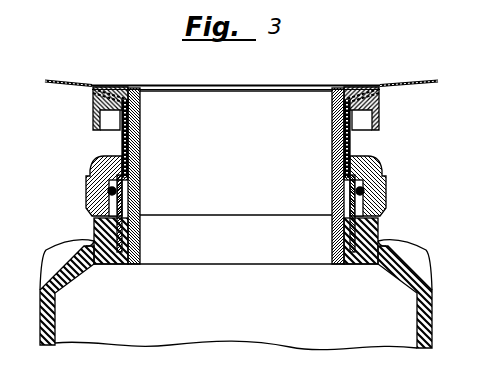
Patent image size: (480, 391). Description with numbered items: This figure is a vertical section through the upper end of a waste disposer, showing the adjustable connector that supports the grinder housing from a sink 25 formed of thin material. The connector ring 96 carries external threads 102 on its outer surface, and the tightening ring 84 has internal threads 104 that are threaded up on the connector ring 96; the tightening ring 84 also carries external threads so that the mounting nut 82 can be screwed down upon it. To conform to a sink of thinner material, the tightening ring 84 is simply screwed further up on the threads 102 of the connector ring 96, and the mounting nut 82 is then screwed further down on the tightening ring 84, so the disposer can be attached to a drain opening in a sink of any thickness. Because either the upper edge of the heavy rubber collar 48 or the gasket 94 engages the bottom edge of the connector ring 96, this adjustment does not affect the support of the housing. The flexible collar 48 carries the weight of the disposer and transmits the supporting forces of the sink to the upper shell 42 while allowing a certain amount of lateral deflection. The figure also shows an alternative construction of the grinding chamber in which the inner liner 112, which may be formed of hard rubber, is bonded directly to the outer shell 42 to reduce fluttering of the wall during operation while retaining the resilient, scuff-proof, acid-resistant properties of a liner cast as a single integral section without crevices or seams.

The sink 25 is at (400, 84).
The upper shell 42 is at (39, 320).
The heavy rubber collar 48 is at (335, 238).
The mounting nut 82 is at (386, 188).
The tightening ring 84 is at (356, 140).
The gasket 94 is at (332, 215).
The connector ring 96 is at (332, 107).
The external threads 102 is at (344, 186).
The internal threads 104 is at (343, 141).
The inner liner 112 is at (55, 305).